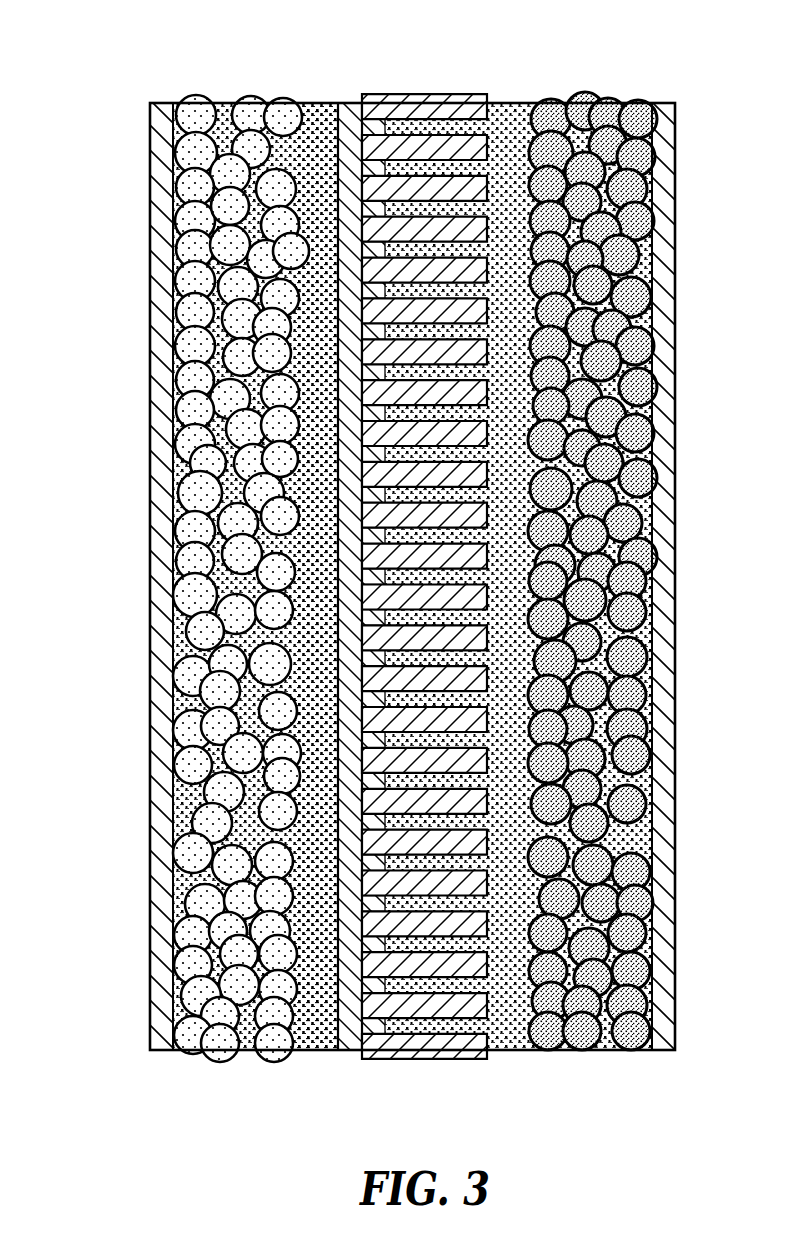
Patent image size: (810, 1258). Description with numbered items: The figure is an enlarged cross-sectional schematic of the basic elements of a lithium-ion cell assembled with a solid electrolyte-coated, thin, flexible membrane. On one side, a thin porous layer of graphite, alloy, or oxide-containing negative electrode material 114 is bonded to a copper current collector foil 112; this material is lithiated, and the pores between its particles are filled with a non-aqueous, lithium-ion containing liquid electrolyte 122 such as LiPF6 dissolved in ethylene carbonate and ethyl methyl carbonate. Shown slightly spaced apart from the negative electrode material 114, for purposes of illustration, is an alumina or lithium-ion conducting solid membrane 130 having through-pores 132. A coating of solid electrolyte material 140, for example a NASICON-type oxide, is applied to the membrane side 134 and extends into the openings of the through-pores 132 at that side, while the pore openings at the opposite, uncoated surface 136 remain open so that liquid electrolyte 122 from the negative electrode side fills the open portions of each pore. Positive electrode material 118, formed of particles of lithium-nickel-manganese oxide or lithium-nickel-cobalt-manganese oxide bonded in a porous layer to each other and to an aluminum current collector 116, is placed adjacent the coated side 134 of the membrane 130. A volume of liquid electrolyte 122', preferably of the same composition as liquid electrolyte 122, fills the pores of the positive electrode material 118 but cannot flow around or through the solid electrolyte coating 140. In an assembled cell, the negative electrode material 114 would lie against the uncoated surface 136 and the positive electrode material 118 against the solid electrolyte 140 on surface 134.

The copper current collector foil 112 is at (677, 185).
The negative electrode material 114 is at (587, 107).
The aluminum current collector 116 is at (150, 187).
The positive electrode material 118 is at (230, 107).
The liquid electrolyte 122 is at (647, 527).
The liquid electrolyte 122' is at (176, 609).
The alumina membrane 130 is at (291, 566).
The through-pores 132 is at (457, 107).
The membrane side 134 is at (355, 472).
The uncoated surface 136 is at (500, 392).
The solid electrolyte coating 140 is at (352, 107).